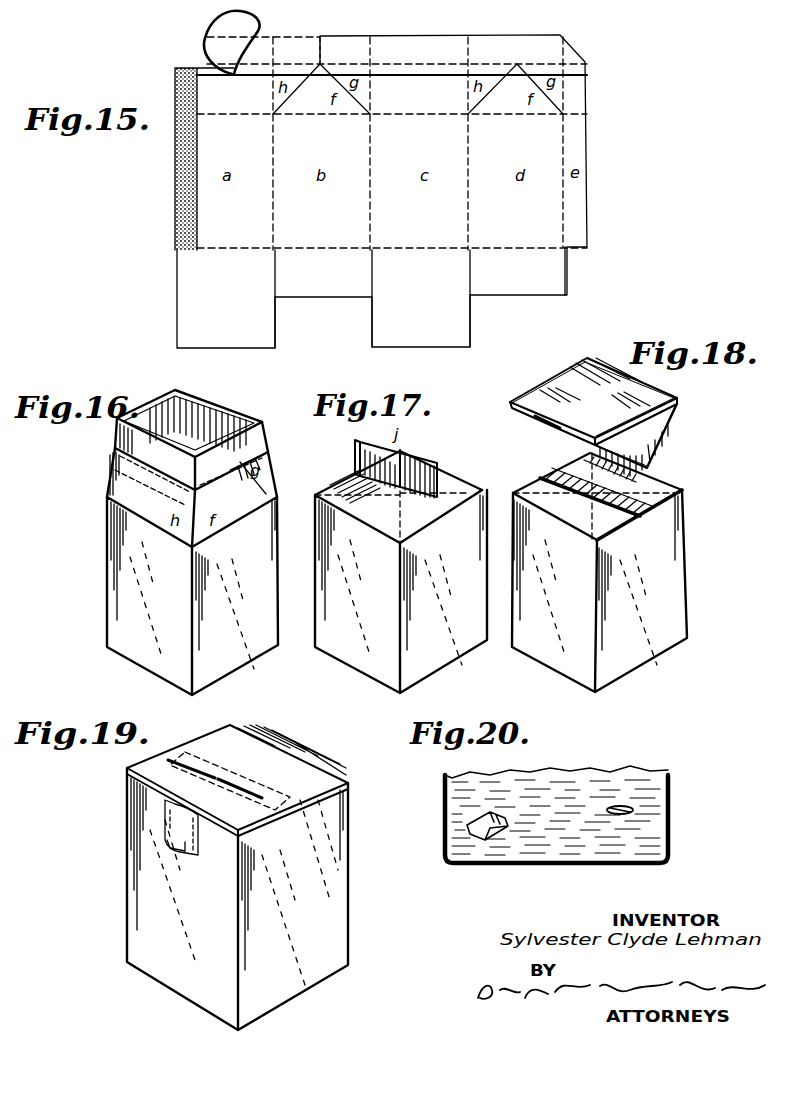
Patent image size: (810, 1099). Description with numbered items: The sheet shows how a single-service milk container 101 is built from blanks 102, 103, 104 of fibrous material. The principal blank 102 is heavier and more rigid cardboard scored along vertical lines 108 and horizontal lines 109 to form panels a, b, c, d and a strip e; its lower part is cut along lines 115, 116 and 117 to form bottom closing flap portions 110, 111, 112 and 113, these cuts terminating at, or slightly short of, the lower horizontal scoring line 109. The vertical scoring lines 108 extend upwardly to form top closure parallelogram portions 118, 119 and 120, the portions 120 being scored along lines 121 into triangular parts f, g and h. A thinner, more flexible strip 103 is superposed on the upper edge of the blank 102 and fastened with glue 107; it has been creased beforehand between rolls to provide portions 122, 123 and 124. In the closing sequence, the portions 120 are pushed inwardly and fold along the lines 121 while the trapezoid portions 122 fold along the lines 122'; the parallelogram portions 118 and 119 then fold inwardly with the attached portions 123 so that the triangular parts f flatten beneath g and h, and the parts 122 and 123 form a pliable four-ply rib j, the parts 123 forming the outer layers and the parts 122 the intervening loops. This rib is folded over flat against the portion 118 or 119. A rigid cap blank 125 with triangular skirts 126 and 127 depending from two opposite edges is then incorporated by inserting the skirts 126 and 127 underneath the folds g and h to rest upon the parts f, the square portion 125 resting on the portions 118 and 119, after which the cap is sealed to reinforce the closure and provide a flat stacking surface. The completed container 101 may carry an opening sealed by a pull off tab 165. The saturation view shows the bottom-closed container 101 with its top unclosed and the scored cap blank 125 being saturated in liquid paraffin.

In FIG. 18, the container 101 is at (535, 648).
In FIG. 19, the container 101 is at (348, 882).
In FIG. 20, the container 101 is at (480, 845).
In FIG. 15, the blank 102 is at (168, 177).
In FIG. 15, the blank 103 is at (438, 29).
In FIG. 18, the blank 104 is at (553, 366).
In FIG. 15, the glue 107 is at (197, 68).
In FIG. 15, the vertical scoring lines 108 is at (275, 205).
In FIG. 15, the horizontal scoring lines 109 is at (319, 118).
In FIG. 15, the bottom closing flap 110 is at (525, 272).
In FIG. 15, the bottom closing flap 111 is at (319, 262).
In FIG. 15, the bottom closing flap 112 is at (209, 293).
In FIG. 15, the bottom closing flap 113 is at (409, 296).
In FIG. 15, the cut 115 is at (470, 268).
In FIG. 15, the cut 116 is at (275, 285).
In FIG. 15, the cut 117 is at (372, 273).
In FIG. 15, the parallelogram portion 118 is at (225, 95).
In FIG. 16, the parallelogram portion 118 is at (200, 437).
In FIG. 17, the parallelogram portion 118 is at (432, 477).
In FIG. 18, the parallelogram portion 118 is at (662, 486).
In FIG. 15, the parallelogram portion 119 is at (413, 96).
In FIG. 16, the parallelogram portion 119 is at (112, 502).
In FIG. 17, the parallelogram portion 119 is at (335, 488).
In FIG. 18, the parallelogram portion 119 is at (530, 487).
In FIG. 15, the parallelogram portion 120 is at (401, 98).
In FIG. 16, the parallelogram portion 120 is at (229, 496).
In FIG. 15, the scoring lines 121 is at (292, 120).
In FIG. 16, the scoring lines 121 is at (268, 478).
In FIG. 17, the scoring lines 121 is at (395, 515).
In FIG. 15, the trapezoid portion 122 is at (415, 34).
In FIG. 16, the trapezoid portion 122 is at (212, 405).
In FIG. 17, the trapezoid portion 122 is at (407, 455).
In FIG. 18, the trapezoid portion 122 is at (518, 471).
In FIG. 15, the fold lines 122' is at (467, 26).
In FIG. 16, the fold lines 122' is at (236, 388).
In FIG. 15, the parallelogram portion 123 is at (405, 46).
In FIG. 16, the parallelogram portion 123 is at (200, 400).
In FIG. 17, the parallelogram portion 123 is at (440, 458).
In FIG. 18, the parallelogram portion 123 is at (580, 500).
In FIG. 15, the portion 124 is at (575, 55).
In FIG. 18, the cap blank 125 is at (660, 390).
In FIG. 19, the cap blank 125 is at (295, 760).
In FIG. 20, the cap blank 125 is at (622, 806).
In FIG. 18, the triangular skirt 126 is at (548, 423).
In FIG. 18, the triangular skirt 127 is at (655, 440).
In FIG. 19, the pull off tab 165 is at (163, 818).